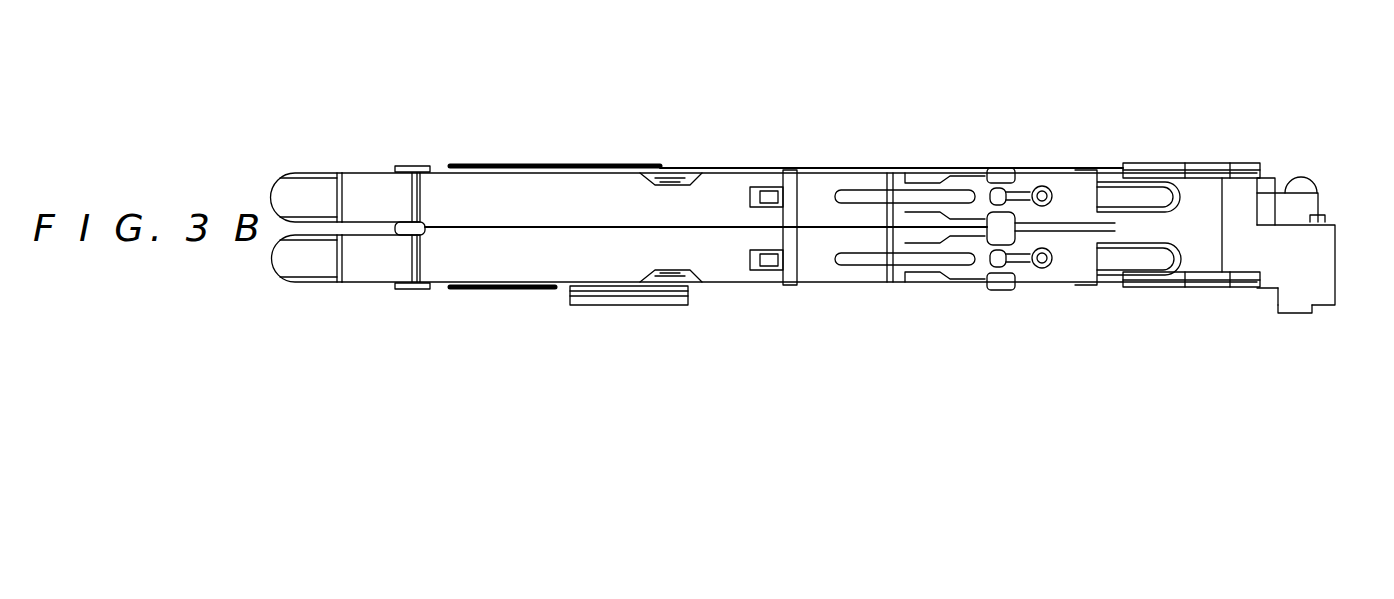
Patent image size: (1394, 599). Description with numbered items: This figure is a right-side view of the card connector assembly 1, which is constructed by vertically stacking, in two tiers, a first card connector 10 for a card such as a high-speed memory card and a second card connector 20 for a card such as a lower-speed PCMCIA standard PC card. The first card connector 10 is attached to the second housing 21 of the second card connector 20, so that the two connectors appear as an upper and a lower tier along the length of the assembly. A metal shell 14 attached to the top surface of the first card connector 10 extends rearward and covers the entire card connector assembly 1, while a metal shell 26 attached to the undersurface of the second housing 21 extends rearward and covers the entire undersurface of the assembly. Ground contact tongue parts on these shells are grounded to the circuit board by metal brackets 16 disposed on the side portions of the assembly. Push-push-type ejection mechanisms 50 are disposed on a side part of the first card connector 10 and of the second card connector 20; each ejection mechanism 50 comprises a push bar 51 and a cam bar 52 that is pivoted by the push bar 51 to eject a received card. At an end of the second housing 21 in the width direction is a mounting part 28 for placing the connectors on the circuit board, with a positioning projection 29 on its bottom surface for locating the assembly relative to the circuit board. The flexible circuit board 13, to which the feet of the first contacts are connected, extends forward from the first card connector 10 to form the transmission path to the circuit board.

The card connector assembly 1 is at (1140, 118).
The first card connector 10 is at (862, 152).
The flexible circuit board (FPC) 13 is at (1305, 176).
The metal shell 14 is at (902, 170).
The metal bracket 16 is at (627, 304).
The second card connector 20 is at (862, 303).
The second housing 21 is at (1238, 207).
The metal shell 26 is at (908, 291).
The mounting part 28 is at (1313, 262).
The positioning projection 29 is at (1295, 314).
The ejection mechanism 50 is at (314, 160).
The push bar 51 is at (1078, 185).
The cam bar 52 is at (1208, 168).